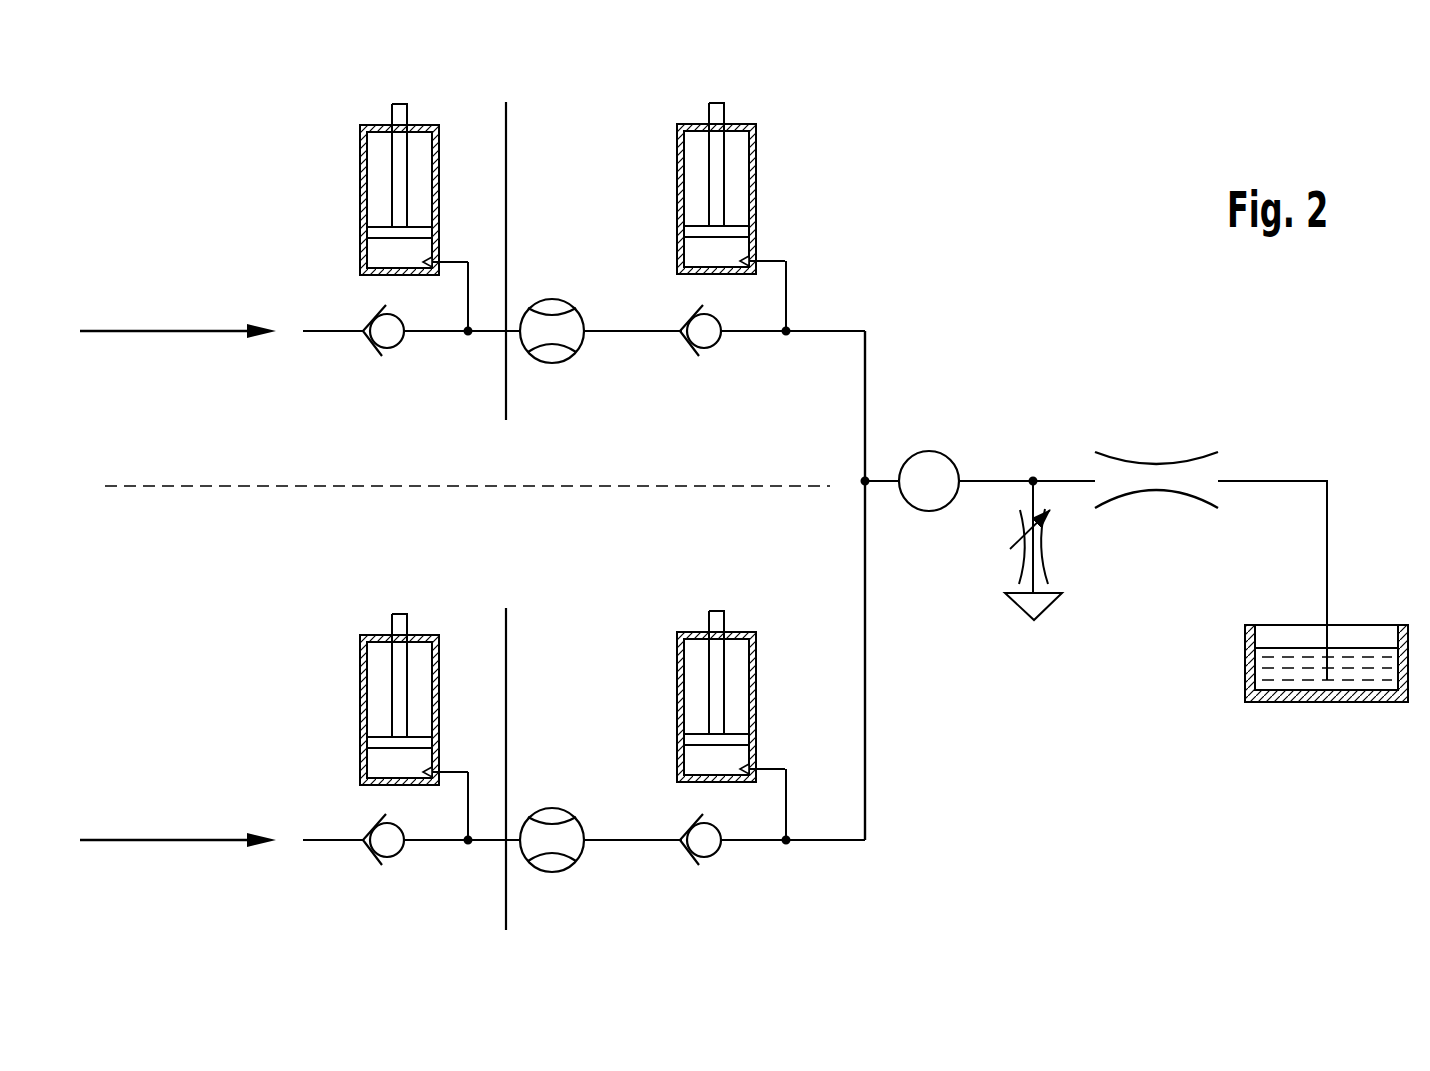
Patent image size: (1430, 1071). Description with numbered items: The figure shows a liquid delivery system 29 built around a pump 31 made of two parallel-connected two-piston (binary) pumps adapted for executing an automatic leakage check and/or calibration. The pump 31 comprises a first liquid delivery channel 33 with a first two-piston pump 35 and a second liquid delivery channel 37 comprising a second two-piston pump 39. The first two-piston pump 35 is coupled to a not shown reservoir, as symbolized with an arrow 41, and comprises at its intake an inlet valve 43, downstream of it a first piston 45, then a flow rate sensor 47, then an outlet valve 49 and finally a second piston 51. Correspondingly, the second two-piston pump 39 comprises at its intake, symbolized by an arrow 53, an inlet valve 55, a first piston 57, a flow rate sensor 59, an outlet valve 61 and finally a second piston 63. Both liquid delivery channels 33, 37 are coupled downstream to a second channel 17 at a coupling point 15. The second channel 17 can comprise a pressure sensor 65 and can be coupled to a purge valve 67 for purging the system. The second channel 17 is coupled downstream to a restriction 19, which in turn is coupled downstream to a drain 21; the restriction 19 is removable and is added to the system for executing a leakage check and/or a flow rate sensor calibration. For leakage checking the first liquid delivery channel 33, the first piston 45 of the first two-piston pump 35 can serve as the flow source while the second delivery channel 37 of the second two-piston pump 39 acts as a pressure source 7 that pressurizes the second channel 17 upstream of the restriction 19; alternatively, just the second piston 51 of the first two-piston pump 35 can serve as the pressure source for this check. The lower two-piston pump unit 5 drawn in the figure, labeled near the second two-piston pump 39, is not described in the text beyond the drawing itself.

The first vehicle seat adjustment cylinder 5 is at (366, 729).
The pressure source 7 is at (718, 682).
The coupling point 15 is at (868, 485).
The second channel 17 is at (998, 481).
The restriction 19 is at (1160, 462).
The drain 21 is at (1297, 680).
The liquid delivery system 29 is at (963, 235).
The pump 31 is at (285, 590).
The first liquid delivery channel 33 is at (614, 320).
The first two-piston pump 35 is at (478, 122).
The second liquid delivery channel 37 is at (636, 850).
The second two-piston pump 39 is at (487, 848).
The arrow 41 is at (131, 331).
The inlet valve 43 is at (393, 348).
The first piston 45 is at (398, 157).
The flow rate sensor 47 is at (578, 350).
The outlet valve 49 is at (712, 345).
The second piston 51 is at (743, 150).
The arrow 53 is at (180, 842).
The inlet valve 55 is at (385, 857).
The first piston 57 is at (398, 715).
The flow rate sensor 59 is at (572, 855).
The outlet valve 61 is at (712, 852).
The second piston 63 is at (693, 655).
The pressure sensor 65 is at (930, 451).
The purge valve 67 is at (1047, 553).